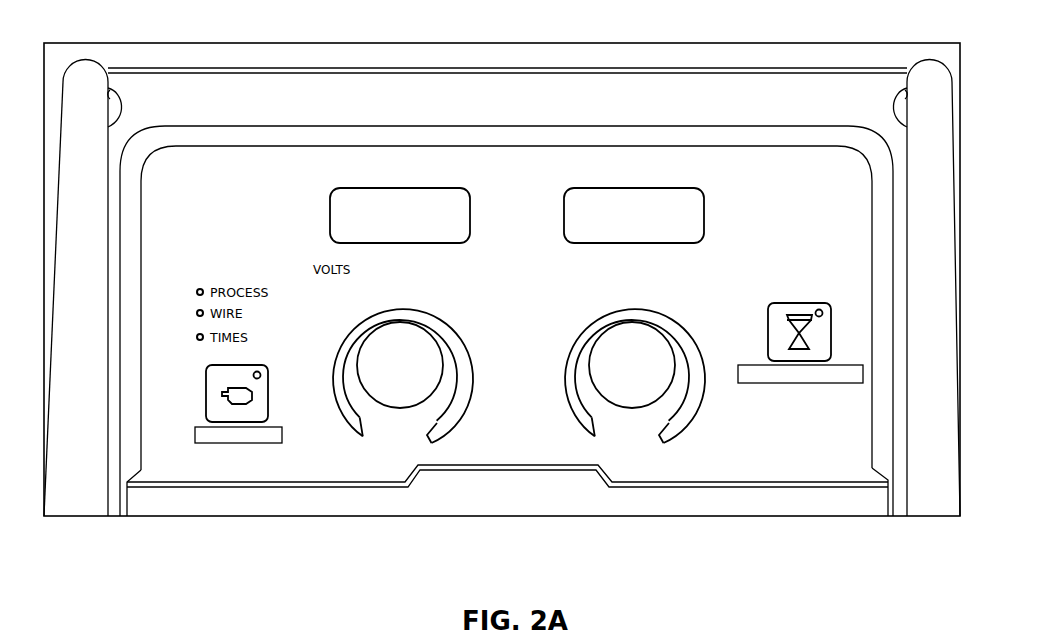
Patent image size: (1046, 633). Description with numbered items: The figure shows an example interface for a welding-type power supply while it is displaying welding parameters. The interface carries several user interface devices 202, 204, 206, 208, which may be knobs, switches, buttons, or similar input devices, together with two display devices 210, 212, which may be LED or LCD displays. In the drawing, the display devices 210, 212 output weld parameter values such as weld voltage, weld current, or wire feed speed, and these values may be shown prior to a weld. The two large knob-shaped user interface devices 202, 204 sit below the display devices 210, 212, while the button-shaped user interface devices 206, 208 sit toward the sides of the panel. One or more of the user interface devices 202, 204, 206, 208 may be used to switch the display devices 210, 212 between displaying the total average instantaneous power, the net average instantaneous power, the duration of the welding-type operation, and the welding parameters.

The user interface device 202 is at (365, 362).
The user interface device 204 is at (597, 362).
The user interface device 206 is at (218, 380).
The user interface device 208 is at (780, 312).
The display device 210 is at (372, 198).
The display device 212 is at (607, 200).